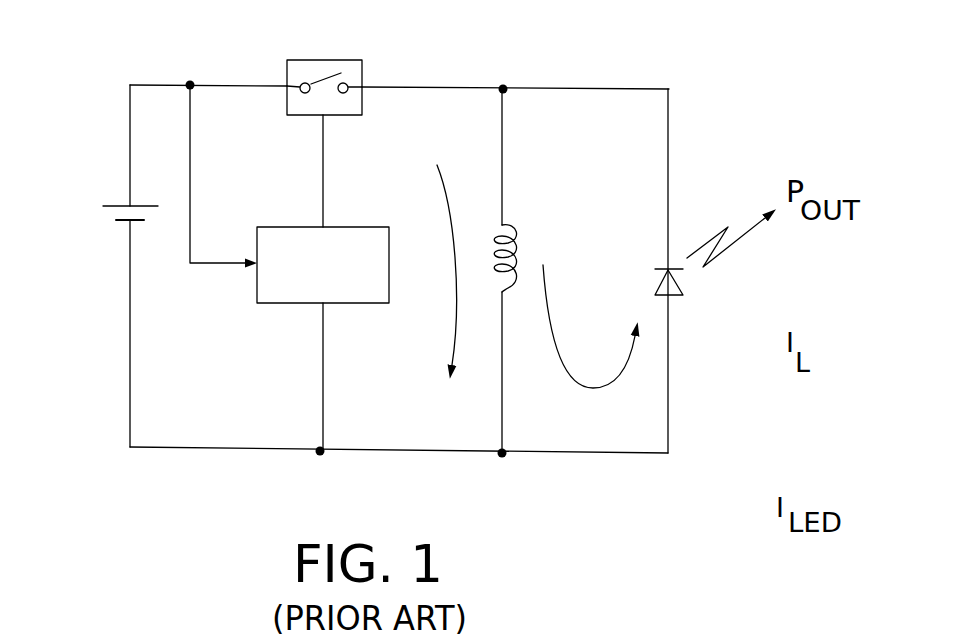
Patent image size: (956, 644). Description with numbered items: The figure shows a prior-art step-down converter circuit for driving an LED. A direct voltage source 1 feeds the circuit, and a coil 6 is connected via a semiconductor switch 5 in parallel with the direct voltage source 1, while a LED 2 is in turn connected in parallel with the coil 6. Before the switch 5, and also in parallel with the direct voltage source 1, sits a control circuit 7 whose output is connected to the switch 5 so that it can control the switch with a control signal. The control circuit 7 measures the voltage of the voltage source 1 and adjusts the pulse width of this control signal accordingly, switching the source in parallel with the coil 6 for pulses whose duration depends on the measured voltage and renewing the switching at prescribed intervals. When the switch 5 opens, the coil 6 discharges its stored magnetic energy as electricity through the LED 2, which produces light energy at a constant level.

The direct voltage source 1 is at (113, 232).
The LED 2 is at (683, 295).
The semiconductor switch 5 is at (335, 60).
The coil 6 is at (513, 225).
The control circuit 7 is at (363, 303).